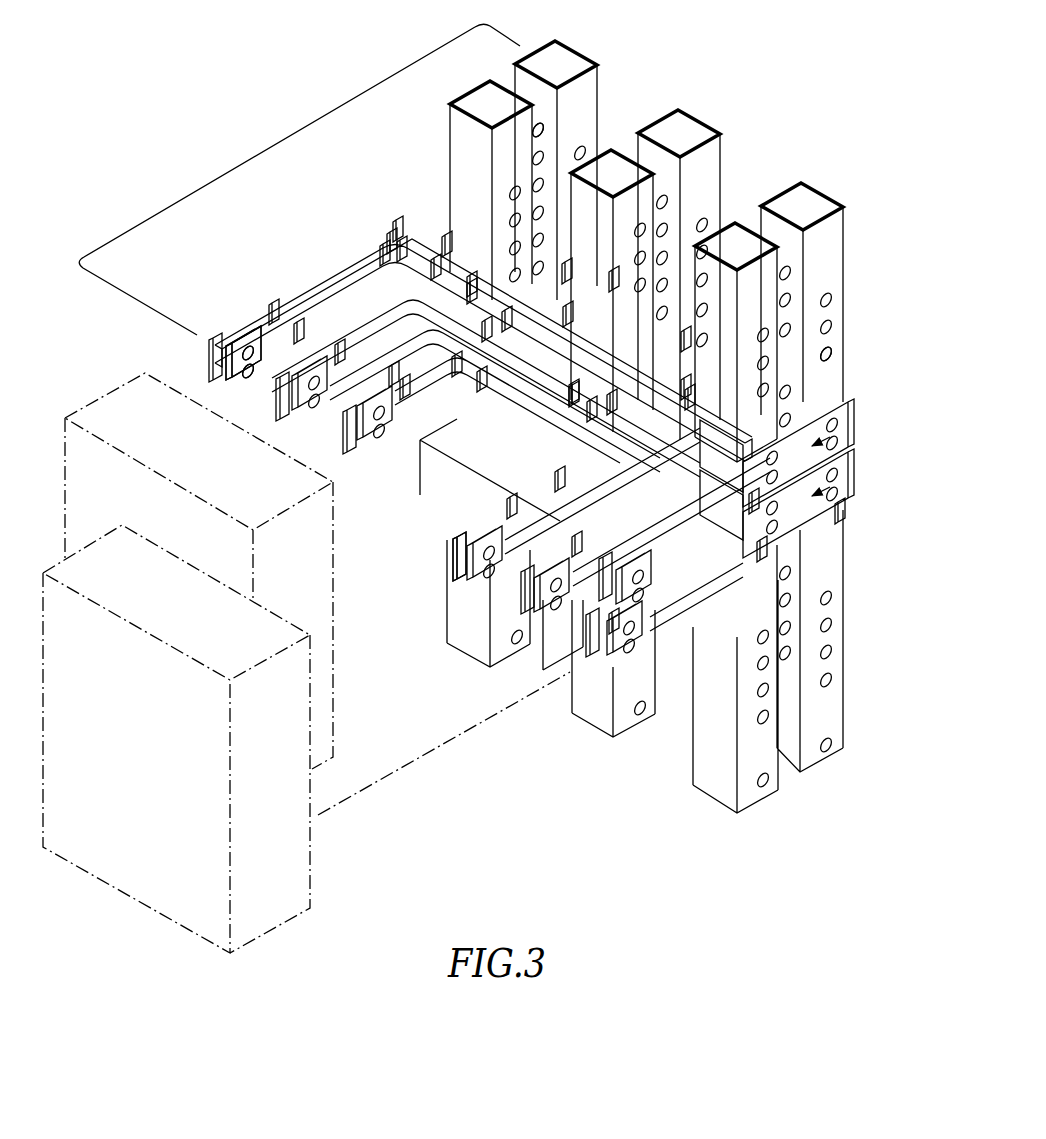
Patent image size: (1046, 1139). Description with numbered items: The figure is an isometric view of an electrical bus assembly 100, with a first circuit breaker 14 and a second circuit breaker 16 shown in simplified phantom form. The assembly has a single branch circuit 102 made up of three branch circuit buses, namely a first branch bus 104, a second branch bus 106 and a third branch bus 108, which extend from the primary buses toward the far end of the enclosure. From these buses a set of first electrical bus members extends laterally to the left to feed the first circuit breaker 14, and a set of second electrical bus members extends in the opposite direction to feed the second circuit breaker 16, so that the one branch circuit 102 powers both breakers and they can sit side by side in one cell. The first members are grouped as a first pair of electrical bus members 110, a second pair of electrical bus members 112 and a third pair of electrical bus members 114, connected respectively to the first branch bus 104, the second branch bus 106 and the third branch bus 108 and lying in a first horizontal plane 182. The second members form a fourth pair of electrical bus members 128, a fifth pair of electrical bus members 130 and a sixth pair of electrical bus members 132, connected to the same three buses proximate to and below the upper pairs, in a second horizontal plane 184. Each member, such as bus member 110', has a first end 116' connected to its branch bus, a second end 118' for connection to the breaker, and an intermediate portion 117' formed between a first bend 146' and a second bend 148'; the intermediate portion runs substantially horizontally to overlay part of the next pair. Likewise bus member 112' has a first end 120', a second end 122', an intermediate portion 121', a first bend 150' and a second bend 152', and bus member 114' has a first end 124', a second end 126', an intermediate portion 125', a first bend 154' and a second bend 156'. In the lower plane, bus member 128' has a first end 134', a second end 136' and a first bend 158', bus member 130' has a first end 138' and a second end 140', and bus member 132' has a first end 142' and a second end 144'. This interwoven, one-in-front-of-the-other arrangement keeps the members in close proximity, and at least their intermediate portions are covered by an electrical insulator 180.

The first circuit breaker 14 is at (98, 400).
The second circuit breaker 16 is at (272, 935).
The electrical bus assembly 100 is at (288, 134).
The single branch circuit 102 is at (627, 756).
The first branch bus 104 is at (810, 202).
The second branch bus 106 is at (690, 128).
The third branch bus 108 is at (566, 62).
The first pair of electrical bus members 110 is at (367, 442).
The electrical bus member 110' is at (398, 439).
The second pair of electrical bus members 112 is at (288, 396).
The electrical bus member 112' is at (318, 404).
The third pair of electrical bus members 114 is at (224, 360).
The electrical bus member 114' is at (250, 372).
The first end 116' is at (849, 343).
The intermediate portion 117' is at (633, 376).
The second end 118' is at (386, 388).
The first end 120' is at (654, 273).
The intermediate portion 121' is at (500, 254).
The second end 122' is at (304, 307).
The first end 124' is at (583, 200).
The intermediate portion 125' is at (472, 248).
The second end 126' is at (226, 321).
The fourth pair of electrical bus members 128 is at (615, 686).
The electrical bus member 128' is at (633, 649).
The fifth pair of electrical bus members 130 is at (531, 617).
The electrical bus member 130' is at (557, 602).
The sixth pair of electrical bus members 132 is at (470, 612).
The electrical bus member 132' is at (517, 589).
The first end 134' is at (862, 539).
The second end 136' is at (616, 597).
The first end 138' is at (654, 310).
The second end 140' is at (486, 500).
The first end 142' is at (589, 262).
The second end 144' is at (454, 553).
The first bend 146' is at (721, 505).
The second bend 148' is at (452, 387).
The first bend 150' is at (567, 422).
The second bend 152' is at (462, 265).
The first bend 154' is at (504, 300).
The second bend 156' is at (361, 219).
The first bend 158' is at (779, 508).
The electrical insulator 180 is at (353, 260).
The first horizontal plane 182 is at (888, 432).
The second horizontal plane 184 is at (888, 498).